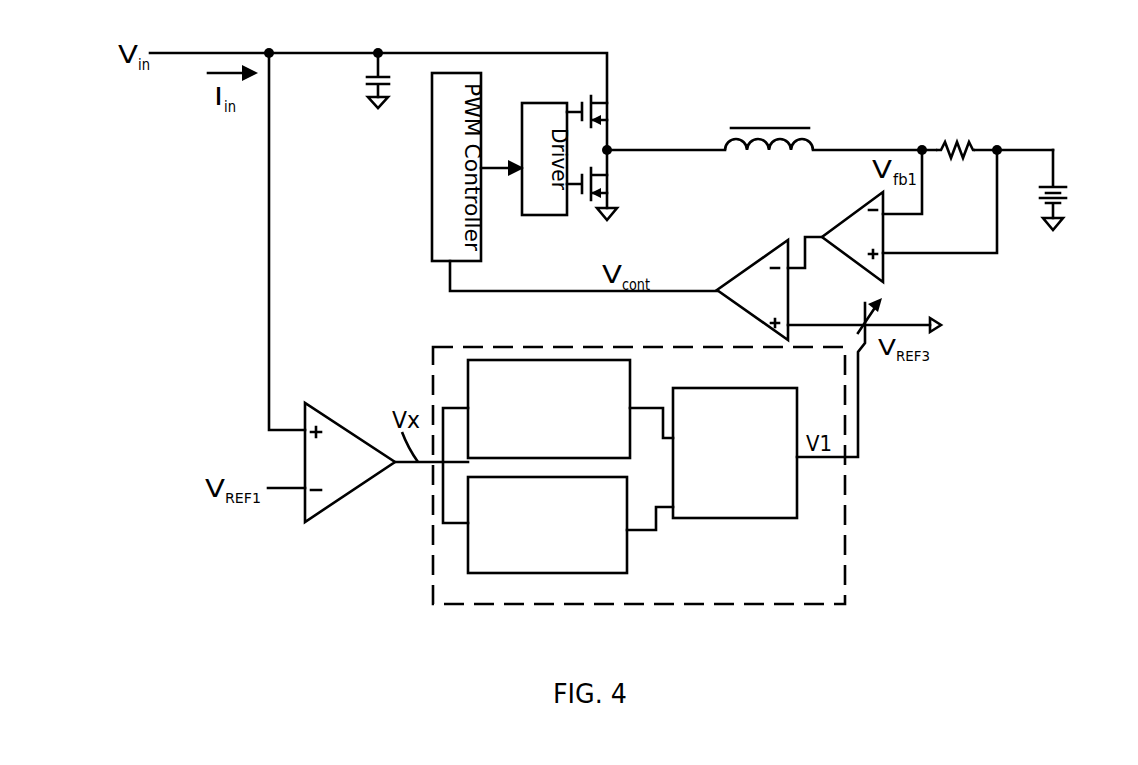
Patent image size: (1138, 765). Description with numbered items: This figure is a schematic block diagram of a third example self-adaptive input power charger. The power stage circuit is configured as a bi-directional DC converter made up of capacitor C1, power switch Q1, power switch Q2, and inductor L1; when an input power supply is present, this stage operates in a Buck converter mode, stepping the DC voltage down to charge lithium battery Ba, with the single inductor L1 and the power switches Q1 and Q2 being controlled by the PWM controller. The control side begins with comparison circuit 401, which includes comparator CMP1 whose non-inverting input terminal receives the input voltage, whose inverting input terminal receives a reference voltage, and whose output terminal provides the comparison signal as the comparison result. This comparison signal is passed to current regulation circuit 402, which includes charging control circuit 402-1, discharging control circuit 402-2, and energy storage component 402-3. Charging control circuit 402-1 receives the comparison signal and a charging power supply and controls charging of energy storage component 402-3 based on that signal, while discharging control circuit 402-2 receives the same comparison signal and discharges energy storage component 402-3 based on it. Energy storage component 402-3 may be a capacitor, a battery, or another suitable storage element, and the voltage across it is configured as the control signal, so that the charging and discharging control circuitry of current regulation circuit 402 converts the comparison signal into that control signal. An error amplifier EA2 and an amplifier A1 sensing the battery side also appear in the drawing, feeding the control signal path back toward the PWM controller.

The comparison circuit 401 is at (350, 448).
The current regulation circuit 402 is at (639, 475).
The charging control circuit 402-1 is at (549, 409).
The discharging control circuit 402-2 is at (547, 525).
The energy storage component 402-3 is at (735, 453).
The capacitor C1 is at (362, 80).
The power switch Q1 is at (603, 112).
The power switch Q2 is at (603, 194).
The inductor L1 is at (769, 124).
The lithium battery Ba is at (1068, 190).
The current sense amplifier A1 is at (852, 237).
The error amplifier EA2 is at (752, 290).
The comparator CMP1 is at (338, 388).